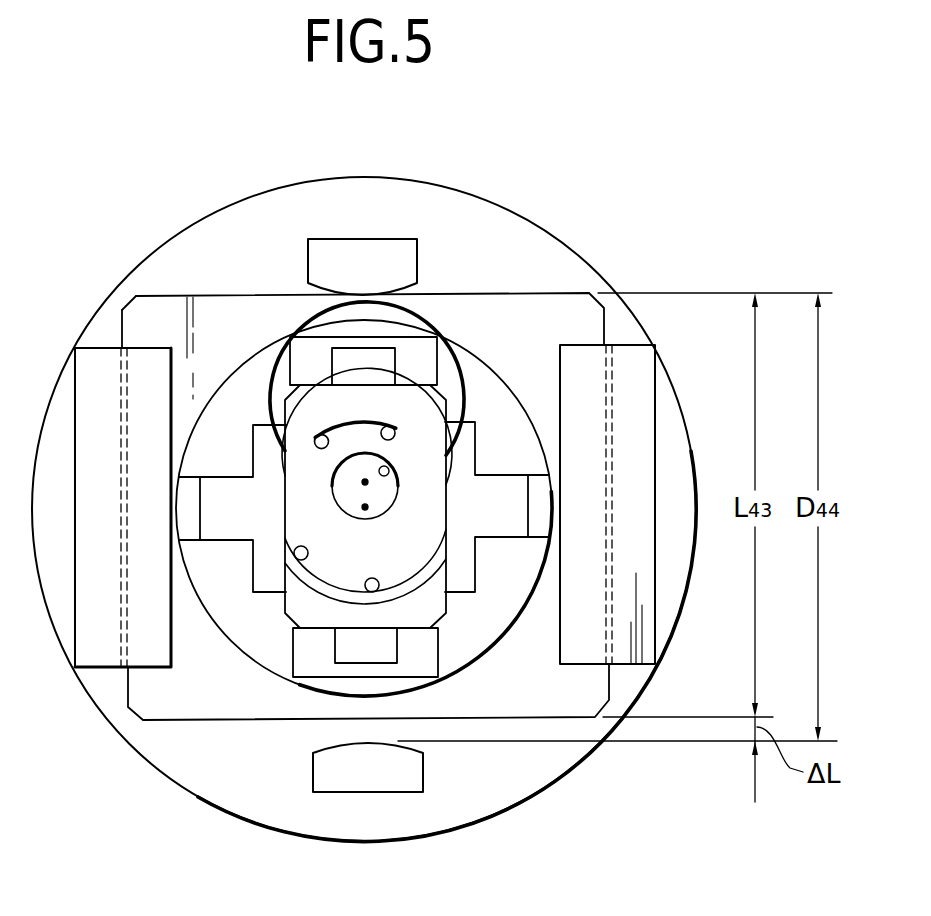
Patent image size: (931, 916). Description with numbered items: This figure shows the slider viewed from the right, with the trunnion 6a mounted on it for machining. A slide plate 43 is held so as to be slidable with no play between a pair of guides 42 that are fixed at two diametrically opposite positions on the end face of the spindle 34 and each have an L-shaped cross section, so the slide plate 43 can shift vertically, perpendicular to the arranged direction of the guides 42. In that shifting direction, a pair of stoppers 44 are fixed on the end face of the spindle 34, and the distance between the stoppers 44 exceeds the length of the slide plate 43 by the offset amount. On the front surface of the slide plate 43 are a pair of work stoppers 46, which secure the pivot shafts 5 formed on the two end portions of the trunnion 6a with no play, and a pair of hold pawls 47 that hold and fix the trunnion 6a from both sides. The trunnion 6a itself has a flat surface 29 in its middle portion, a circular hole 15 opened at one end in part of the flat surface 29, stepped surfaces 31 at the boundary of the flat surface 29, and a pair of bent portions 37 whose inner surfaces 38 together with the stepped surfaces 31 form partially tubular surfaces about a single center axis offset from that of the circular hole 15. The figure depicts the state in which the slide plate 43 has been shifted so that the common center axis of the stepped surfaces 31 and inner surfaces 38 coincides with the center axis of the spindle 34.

The spindle 34 is at (472, 208).
The slide plate 43 is at (140, 307).
The guide 42 is at (82, 632).
The stopper 44 is at (363, 255).
The trunnion 6a is at (300, 406).
The work stopper 46 is at (308, 350).
The pivot shaft 5 is at (377, 355).
The bent portion 37 is at (443, 393).
The hold pawl 47 is at (212, 505).
The stepped surface 31 is at (400, 430).
The flat surface 29 is at (444, 523).
The inner surface 38 is at (308, 440).
The circular hole 15 is at (386, 472).